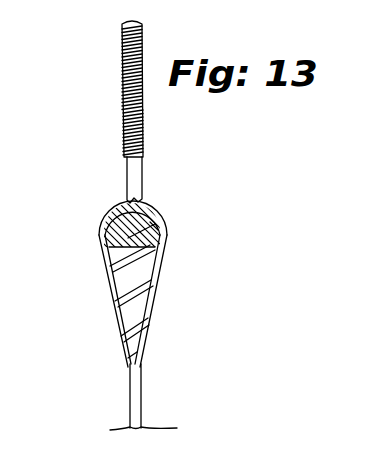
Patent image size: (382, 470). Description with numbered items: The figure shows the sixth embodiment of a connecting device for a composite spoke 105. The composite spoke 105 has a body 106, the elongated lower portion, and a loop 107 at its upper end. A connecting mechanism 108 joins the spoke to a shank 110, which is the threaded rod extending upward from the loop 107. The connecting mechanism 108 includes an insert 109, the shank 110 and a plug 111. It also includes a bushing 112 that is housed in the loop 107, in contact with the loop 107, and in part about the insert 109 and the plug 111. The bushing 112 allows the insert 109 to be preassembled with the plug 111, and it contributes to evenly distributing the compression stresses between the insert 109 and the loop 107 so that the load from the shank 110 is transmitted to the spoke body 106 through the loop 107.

The composite spoke 105 is at (141, 410).
The body 106 is at (130, 407).
The loop 107 is at (152, 322).
The connecting mechanism 108 is at (143, 182).
The insert 109 is at (161, 213).
The shank 110 is at (144, 170).
The plug 111 is at (131, 307).
The bushing 112 is at (113, 283).